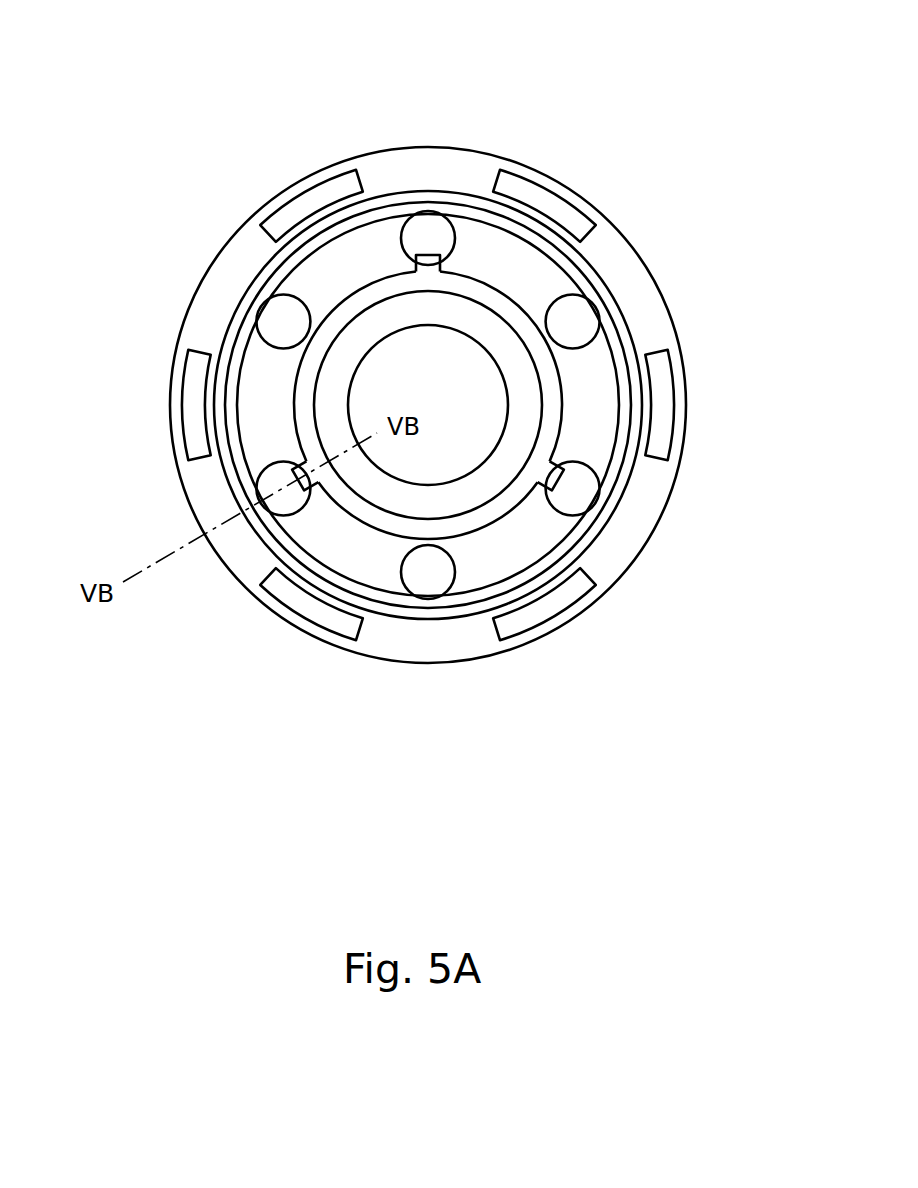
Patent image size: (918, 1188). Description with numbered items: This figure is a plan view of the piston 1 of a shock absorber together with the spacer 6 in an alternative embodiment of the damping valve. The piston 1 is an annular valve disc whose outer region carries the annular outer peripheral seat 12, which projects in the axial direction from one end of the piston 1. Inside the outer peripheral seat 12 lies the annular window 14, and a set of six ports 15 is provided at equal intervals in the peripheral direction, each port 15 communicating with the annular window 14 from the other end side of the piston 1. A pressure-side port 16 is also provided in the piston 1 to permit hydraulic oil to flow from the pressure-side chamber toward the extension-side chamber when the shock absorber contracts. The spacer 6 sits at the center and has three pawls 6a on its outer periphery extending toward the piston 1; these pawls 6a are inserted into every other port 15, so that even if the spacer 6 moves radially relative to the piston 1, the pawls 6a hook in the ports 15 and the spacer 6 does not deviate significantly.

The piston 1 is at (397, 149).
The outer peripheral seat 12 is at (367, 197).
The annular window 14 is at (542, 282).
The port 15 is at (443, 240).
The pressure-side port 16 is at (298, 205).
The spacer 6 is at (542, 388).
The pawls 6a is at (427, 258).